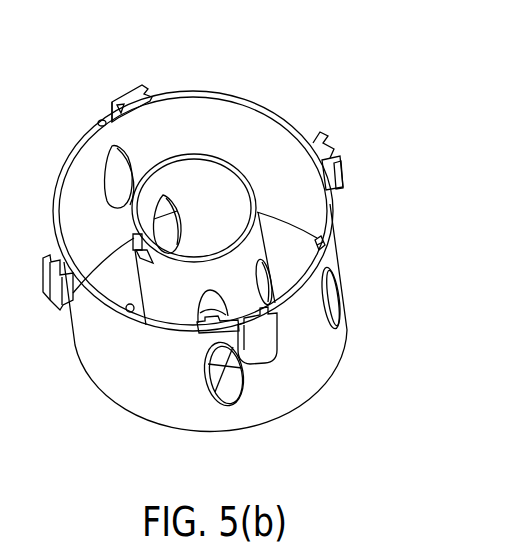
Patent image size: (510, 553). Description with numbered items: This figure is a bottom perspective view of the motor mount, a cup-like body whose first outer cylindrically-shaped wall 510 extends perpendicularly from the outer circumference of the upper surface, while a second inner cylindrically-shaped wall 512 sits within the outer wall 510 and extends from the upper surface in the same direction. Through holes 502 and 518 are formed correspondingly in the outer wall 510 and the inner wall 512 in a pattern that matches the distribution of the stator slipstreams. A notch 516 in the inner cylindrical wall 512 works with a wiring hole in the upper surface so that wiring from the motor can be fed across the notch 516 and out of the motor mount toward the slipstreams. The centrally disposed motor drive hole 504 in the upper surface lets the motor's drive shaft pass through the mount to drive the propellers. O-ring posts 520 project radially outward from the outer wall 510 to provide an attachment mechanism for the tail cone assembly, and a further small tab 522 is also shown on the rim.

The first outer cylindrically-shaped wall 510 is at (228, 92).
The through hole 502 is at (117, 188).
The second inner cylindrically-shaped wall 512 is at (250, 177).
The motor drive hole 504 is at (198, 331).
The notch 516 is at (136, 242).
The through hole 518 is at (272, 293).
The O-ring post 520 is at (328, 146).
The latch tab 522 is at (105, 118).